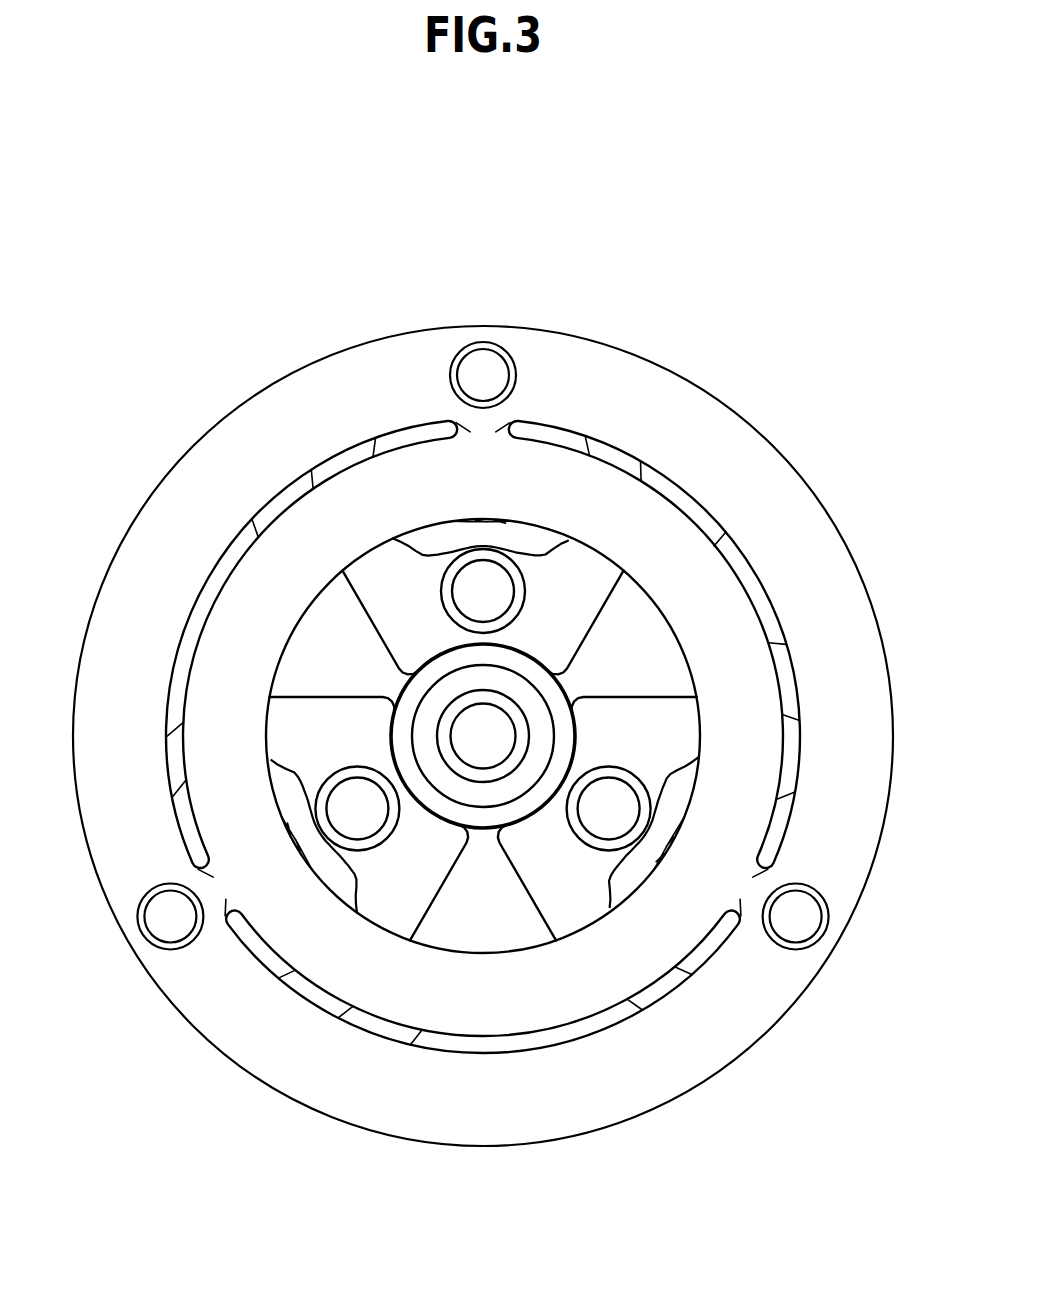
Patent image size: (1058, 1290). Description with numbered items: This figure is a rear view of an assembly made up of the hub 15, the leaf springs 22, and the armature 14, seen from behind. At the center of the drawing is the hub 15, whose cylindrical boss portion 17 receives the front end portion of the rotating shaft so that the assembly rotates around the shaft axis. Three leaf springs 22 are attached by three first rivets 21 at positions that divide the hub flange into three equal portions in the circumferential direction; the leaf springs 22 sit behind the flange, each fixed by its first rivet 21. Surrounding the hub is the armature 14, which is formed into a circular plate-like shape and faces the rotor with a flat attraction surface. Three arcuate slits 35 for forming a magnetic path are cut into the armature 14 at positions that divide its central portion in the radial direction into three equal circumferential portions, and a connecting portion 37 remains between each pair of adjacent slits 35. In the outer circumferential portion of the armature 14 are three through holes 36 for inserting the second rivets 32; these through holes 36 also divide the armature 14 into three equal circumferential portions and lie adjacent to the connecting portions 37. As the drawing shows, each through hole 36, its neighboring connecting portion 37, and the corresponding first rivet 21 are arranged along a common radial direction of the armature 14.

The armature 14 is at (243, 398).
The hub 15 is at (523, 605).
The boss portion 17 is at (571, 752).
The first rivet 21 is at (622, 576).
The leaf spring 22 is at (327, 690).
The second rivet 32 is at (465, 370).
The slit 35 is at (247, 524).
The through hole 36 is at (508, 378).
The connecting portion 37 is at (483, 432).